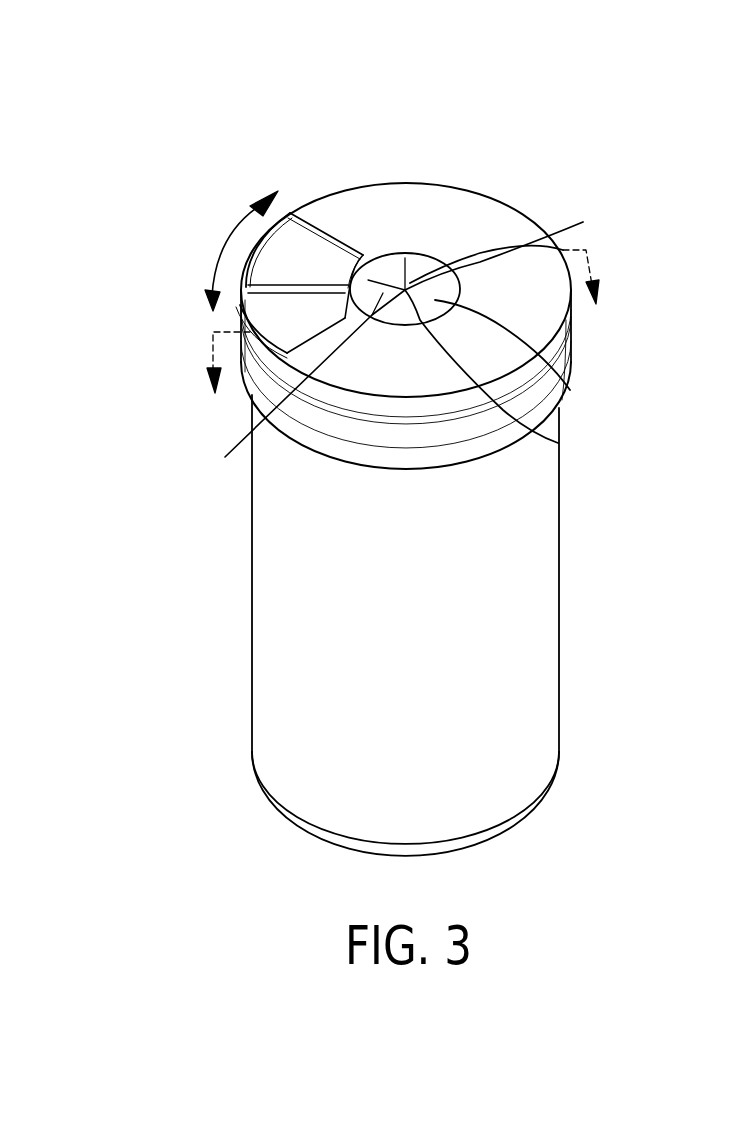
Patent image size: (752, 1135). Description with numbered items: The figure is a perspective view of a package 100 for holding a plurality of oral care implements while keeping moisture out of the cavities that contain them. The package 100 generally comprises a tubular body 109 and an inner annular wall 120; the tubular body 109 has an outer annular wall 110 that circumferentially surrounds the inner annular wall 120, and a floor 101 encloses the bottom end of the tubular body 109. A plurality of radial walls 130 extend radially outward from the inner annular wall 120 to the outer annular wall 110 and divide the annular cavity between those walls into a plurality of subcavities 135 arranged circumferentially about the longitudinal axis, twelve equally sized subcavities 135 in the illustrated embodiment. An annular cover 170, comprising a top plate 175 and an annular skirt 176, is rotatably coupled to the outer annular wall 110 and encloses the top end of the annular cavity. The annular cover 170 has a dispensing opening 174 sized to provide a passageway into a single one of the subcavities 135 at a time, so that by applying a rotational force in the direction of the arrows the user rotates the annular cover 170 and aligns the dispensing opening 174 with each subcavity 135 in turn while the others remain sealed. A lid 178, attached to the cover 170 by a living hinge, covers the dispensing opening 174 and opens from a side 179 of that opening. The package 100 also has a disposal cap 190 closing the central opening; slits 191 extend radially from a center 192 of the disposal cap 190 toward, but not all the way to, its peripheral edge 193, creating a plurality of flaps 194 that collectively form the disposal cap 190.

The package 100 is at (115, 100).
The floor 101 is at (282, 808).
The tubular body 109 is at (322, 626).
The outer annular wall 110 is at (320, 543).
The inner annular wall 120 is at (338, 275).
The radial walls 130 is at (292, 285).
The subcavities 135 is at (268, 310).
The annular cover 170 is at (384, 286).
The dispensing opening 174 is at (280, 202).
The top plate 175 is at (513, 237).
The annular skirt 176 is at (550, 396).
The lid 178 is at (332, 257).
The side 179 is at (370, 317).
The disposal cap 190 is at (420, 268).
The slits 191 is at (398, 253).
The center 192 is at (540, 237).
The peripheral edge 193 is at (545, 347).
The flaps 194 is at (480, 243).